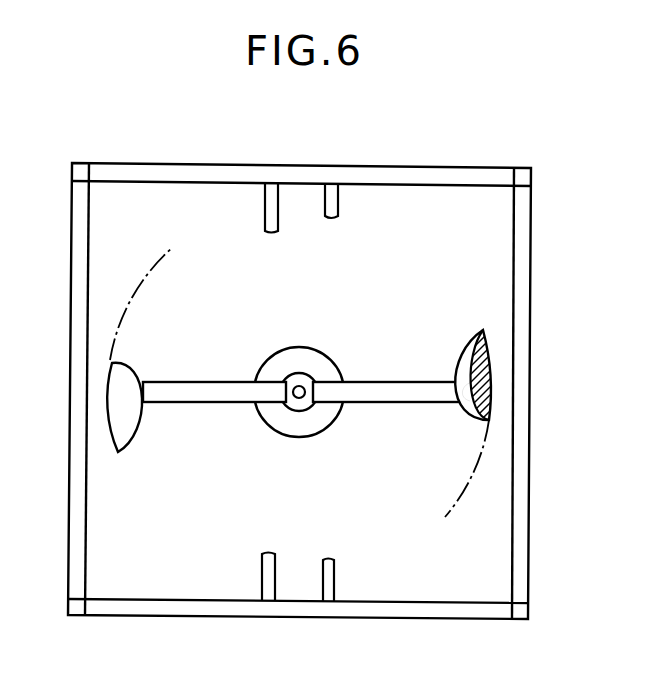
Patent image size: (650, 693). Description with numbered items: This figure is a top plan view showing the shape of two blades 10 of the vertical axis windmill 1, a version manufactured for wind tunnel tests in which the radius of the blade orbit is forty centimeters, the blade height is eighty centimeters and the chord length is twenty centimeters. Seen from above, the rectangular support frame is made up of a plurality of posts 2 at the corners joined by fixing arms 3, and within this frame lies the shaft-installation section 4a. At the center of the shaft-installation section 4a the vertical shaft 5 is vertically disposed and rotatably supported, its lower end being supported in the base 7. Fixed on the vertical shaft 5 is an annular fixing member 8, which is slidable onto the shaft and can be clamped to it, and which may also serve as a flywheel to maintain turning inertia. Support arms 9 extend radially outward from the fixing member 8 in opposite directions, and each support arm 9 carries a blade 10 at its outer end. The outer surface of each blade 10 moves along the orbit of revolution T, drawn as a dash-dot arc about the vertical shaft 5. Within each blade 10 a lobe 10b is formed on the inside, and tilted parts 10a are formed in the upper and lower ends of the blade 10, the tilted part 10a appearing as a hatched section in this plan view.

The vertical axis windmill 1 is at (353, 160).
The post 2 is at (78, 163).
The fixing arm 3 is at (241, 164).
The shaft-installation section 4a is at (149, 575).
The vertical shaft 5 is at (303, 386).
The base 7 is at (266, 428).
The fixing member 8 is at (303, 411).
The support arm 9 is at (191, 382).
The blade 10 is at (304, 383).
The tilted part 10a is at (459, 365).
The lobe 10b is at (465, 402).
The orbit of revolution T is at (160, 266).